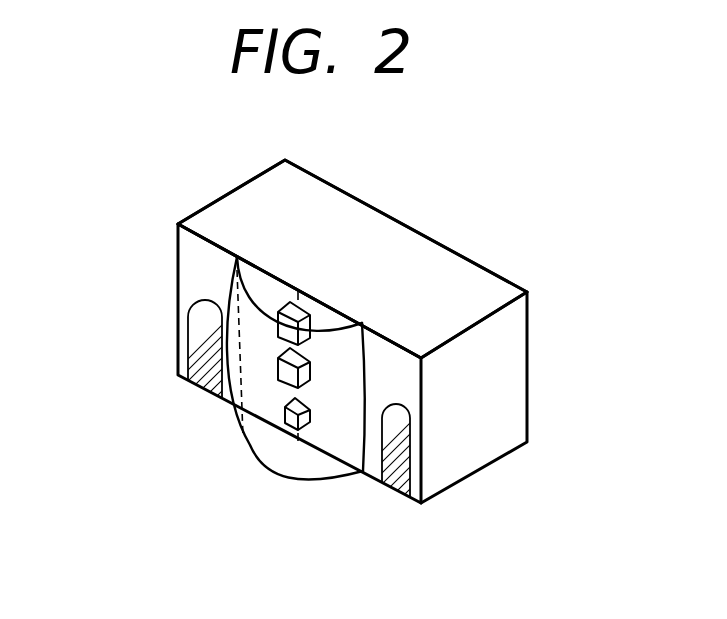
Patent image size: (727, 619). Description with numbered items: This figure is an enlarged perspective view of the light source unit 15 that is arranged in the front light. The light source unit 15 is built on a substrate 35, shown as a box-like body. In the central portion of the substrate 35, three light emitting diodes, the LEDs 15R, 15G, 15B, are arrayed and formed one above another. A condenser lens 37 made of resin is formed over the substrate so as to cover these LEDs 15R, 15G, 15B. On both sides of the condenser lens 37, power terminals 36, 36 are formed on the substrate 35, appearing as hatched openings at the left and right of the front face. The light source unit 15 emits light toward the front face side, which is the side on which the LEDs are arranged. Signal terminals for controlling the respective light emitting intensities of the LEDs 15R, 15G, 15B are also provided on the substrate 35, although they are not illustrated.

The light source unit 15 is at (452, 265).
The substrate 35 is at (300, 186).
The power terminal 36 is at (200, 355).
The condenser lens 37 is at (320, 463).
The LED 15B is at (280, 318).
The LED 15G is at (285, 368).
The LED 15R is at (291, 417).